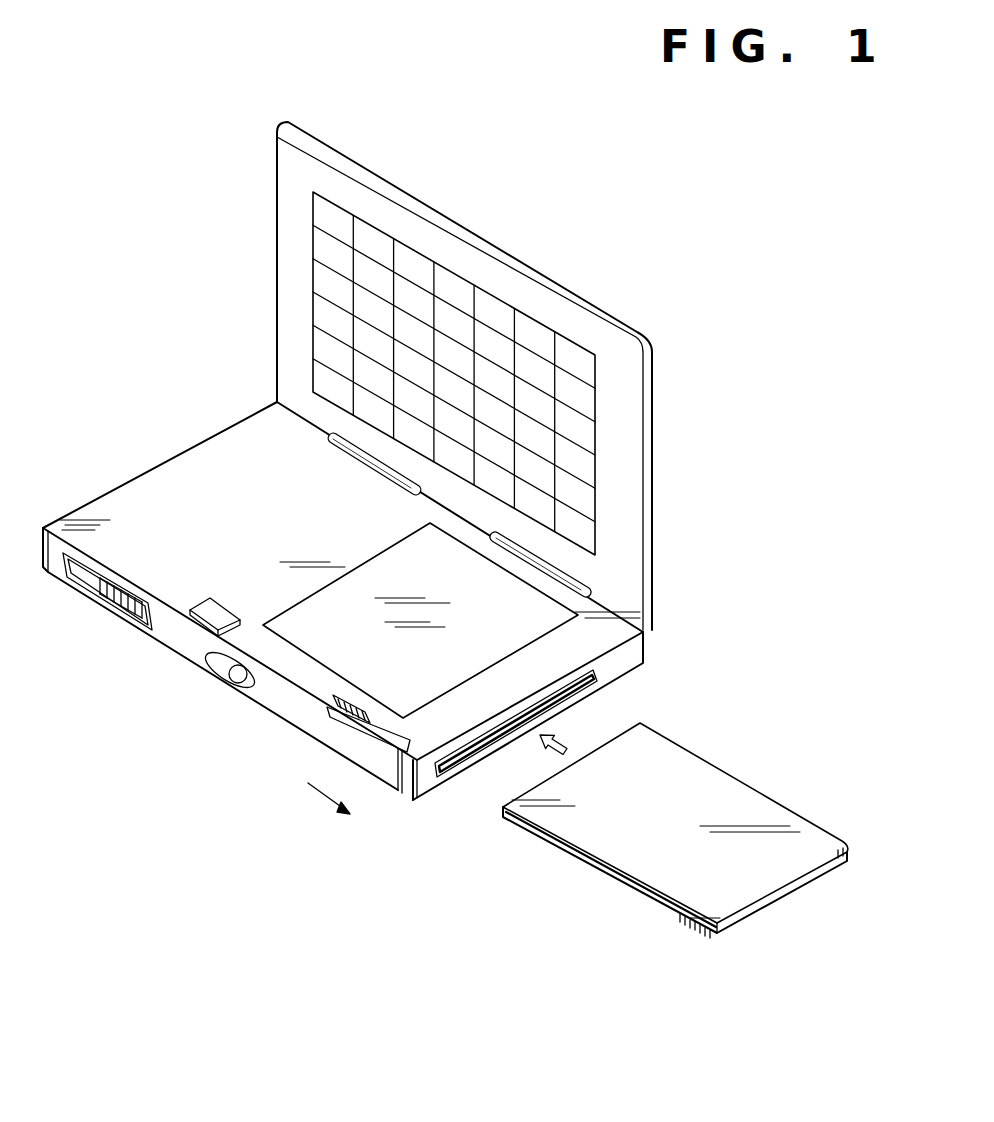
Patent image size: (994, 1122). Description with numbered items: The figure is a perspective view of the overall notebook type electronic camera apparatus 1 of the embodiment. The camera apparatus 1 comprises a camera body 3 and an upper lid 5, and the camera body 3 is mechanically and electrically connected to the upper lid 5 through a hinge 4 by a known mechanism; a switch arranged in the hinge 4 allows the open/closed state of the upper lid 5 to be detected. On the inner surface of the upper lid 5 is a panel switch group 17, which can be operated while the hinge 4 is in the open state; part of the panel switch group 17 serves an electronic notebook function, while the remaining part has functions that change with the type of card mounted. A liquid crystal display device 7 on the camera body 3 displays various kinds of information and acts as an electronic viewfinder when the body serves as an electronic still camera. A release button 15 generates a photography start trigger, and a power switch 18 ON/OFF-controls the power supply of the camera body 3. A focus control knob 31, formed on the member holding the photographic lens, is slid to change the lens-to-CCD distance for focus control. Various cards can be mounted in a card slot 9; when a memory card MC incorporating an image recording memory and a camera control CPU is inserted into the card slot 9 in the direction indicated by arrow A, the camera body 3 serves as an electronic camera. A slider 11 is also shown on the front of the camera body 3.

The notebook type electronic camera apparatus 1 is at (607, 270).
The camera body 3 is at (140, 490).
The hinge 4 is at (567, 573).
The upper lid 5 is at (620, 343).
The liquid crystal display device 7 is at (413, 692).
The card slot 9 is at (593, 673).
The eject slider 11 is at (340, 720).
The release button 15 is at (190, 622).
The panel switch group 17 is at (313, 272).
The power switch 18 is at (222, 663).
The focus control knob 31 is at (108, 607).
The insertion direction arrow A is at (339, 810).
The memory card MC is at (660, 873).